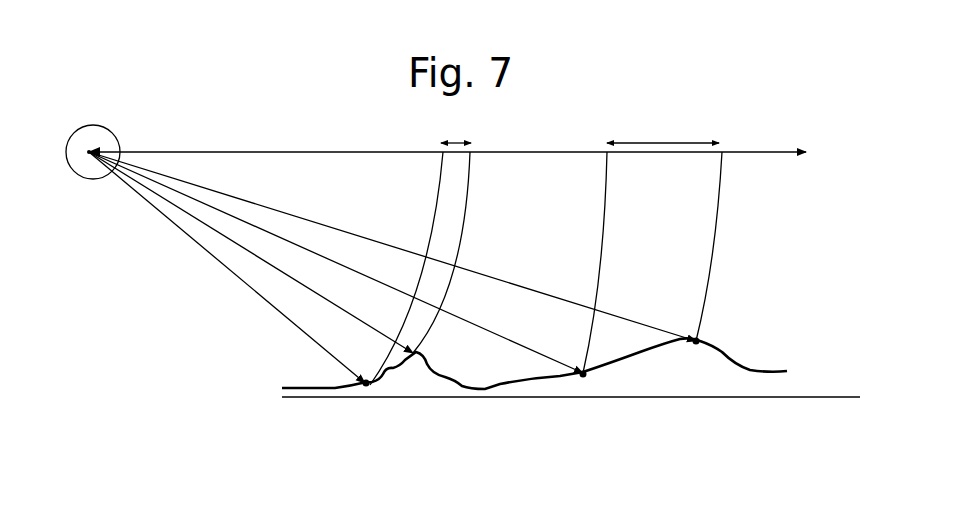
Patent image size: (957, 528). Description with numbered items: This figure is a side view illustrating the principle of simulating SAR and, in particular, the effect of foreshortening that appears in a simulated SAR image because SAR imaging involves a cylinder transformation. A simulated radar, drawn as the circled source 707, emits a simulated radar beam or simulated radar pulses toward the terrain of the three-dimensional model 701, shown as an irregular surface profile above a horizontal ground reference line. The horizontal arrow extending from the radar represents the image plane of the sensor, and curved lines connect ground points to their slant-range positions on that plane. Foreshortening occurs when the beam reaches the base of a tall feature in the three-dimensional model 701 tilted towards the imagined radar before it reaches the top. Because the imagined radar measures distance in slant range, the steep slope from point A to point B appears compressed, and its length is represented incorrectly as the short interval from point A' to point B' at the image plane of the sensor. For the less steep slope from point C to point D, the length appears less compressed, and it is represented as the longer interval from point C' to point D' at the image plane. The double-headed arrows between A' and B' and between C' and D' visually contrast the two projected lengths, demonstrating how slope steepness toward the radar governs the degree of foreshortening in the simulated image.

The sensor / projection center 707 is at (103, 140).
The 3D model 701 is at (755, 370).
The point A is at (232, 291).
The point B is at (255, 291).
The point C is at (339, 291).
The point D is at (396, 291).
The point A' is at (406, 256).
The point B' is at (454, 240).
The point C' is at (595, 250).
The point D' is at (720, 234).